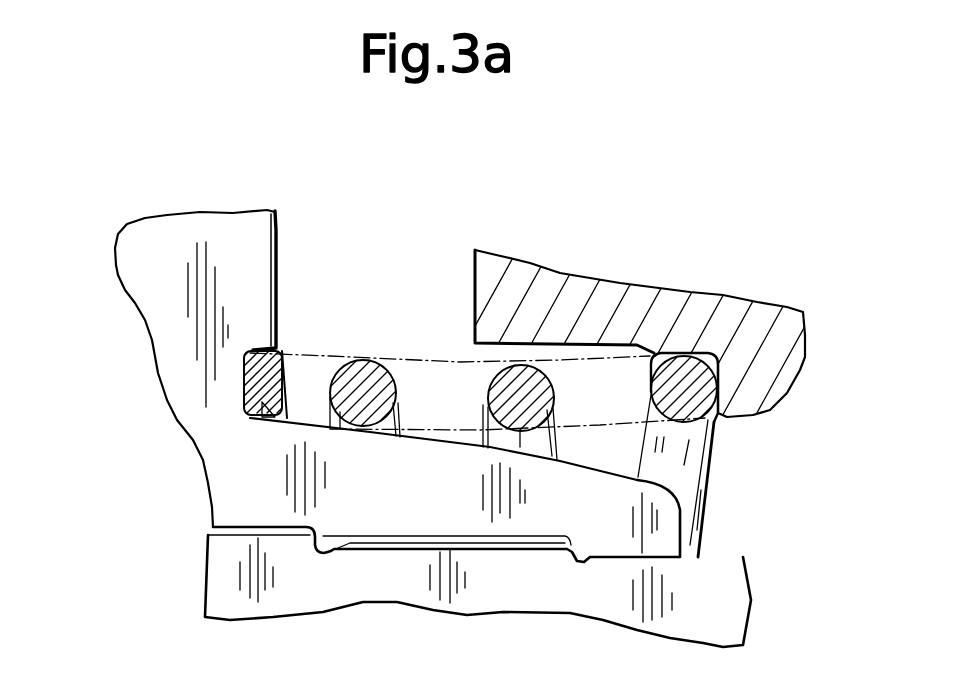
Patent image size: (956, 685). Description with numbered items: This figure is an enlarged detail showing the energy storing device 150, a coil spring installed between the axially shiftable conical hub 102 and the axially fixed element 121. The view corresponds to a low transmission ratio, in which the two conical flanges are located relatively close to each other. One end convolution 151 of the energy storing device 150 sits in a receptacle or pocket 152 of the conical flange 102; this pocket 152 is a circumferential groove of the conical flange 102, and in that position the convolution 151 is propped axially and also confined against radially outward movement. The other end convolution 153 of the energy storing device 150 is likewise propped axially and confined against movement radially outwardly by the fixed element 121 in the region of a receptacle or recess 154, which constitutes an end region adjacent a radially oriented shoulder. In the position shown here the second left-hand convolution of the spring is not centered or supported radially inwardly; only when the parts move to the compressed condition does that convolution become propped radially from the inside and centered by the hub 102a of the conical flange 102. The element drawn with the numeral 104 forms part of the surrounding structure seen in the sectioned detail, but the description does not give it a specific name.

The conical hub 102 is at (160, 332).
The hub of the conical flange 102a is at (350, 487).
The base / shaft part 104 is at (520, 597).
The axially fixed element 121 is at (598, 272).
The energy storing device 150 is at (368, 370).
The end convolution 151 is at (281, 352).
The receptacle or pocket 152 is at (255, 350).
The other end convolution 153 is at (713, 432).
The receptacle or recess 154 is at (714, 352).